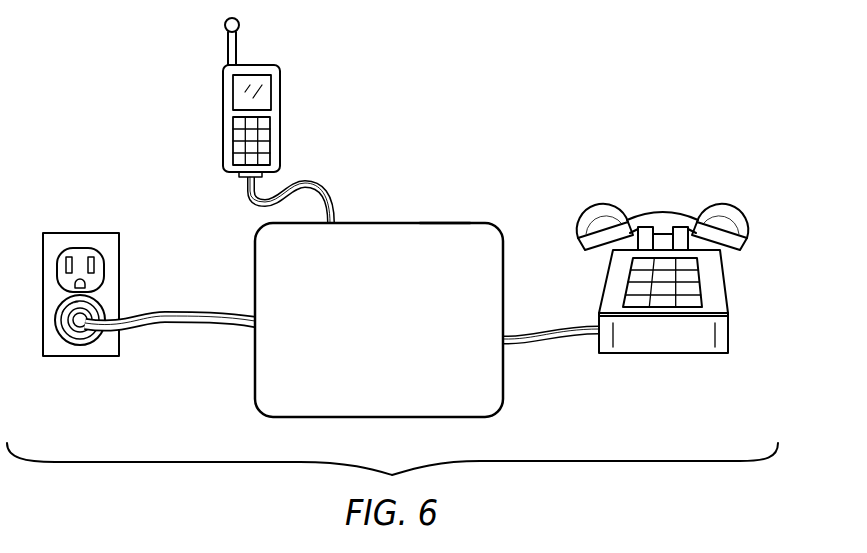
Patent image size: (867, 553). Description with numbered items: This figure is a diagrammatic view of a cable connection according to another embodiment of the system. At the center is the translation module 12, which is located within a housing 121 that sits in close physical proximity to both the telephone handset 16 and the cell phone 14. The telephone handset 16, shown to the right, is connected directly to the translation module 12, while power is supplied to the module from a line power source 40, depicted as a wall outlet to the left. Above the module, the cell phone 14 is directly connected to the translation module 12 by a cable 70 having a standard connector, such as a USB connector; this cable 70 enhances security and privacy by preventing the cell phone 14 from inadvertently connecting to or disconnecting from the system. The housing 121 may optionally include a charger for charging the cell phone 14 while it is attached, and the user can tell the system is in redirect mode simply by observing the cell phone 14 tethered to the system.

The translation module 12 is at (327, 278).
The cell phone 14 is at (225, 104).
The telephone handset 16 is at (602, 293).
The line power source 40 is at (120, 270).
The cable 70 is at (308, 180).
The housing 121 is at (445, 222).